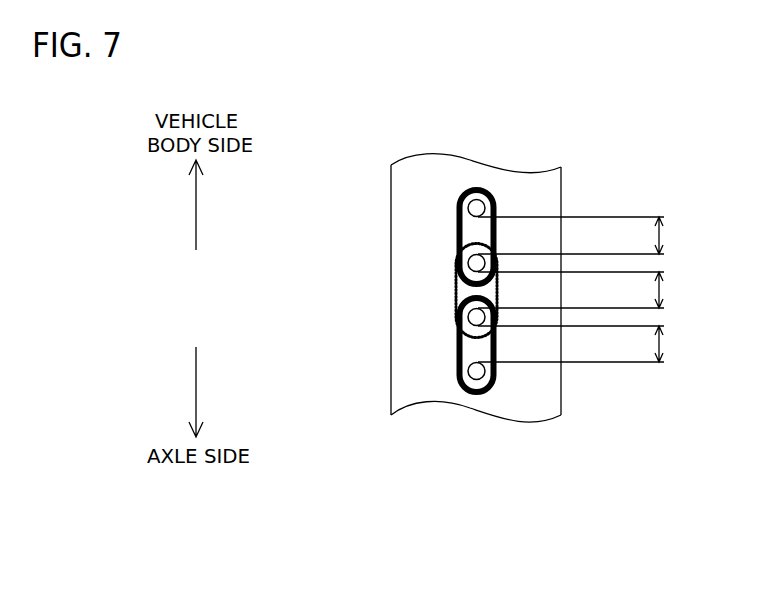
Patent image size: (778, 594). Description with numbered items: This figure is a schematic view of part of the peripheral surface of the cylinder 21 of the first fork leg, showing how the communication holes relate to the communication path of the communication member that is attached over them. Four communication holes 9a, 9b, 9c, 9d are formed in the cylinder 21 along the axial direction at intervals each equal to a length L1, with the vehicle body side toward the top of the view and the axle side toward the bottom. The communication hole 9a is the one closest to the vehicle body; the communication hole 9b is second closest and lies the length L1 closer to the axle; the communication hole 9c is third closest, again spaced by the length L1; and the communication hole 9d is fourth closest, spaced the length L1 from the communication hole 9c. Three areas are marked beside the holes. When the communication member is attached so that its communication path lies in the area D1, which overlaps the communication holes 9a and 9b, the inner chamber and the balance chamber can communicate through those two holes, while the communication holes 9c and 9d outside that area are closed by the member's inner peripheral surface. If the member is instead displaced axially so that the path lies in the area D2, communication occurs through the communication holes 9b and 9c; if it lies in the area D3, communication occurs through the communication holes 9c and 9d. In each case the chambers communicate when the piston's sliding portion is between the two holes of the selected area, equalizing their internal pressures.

The cylinder 21 is at (388, 194).
The first communication hole 9a is at (467, 208).
The second communication hole 9b is at (466, 262).
The third communication hole 9c is at (467, 315).
The fourth communication hole 9d is at (467, 370).
The area D1 is at (487, 190).
The area D2 is at (497, 288).
The area D3 is at (497, 380).
The length L1 is at (581, 289).